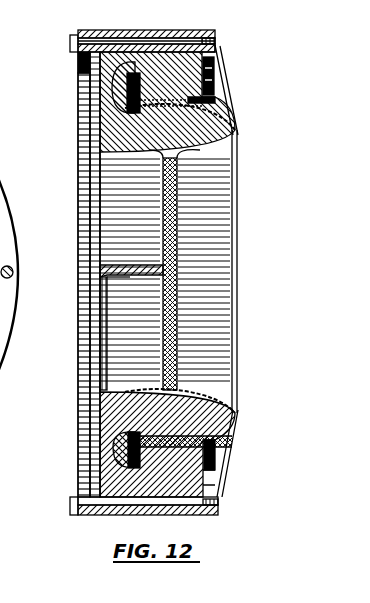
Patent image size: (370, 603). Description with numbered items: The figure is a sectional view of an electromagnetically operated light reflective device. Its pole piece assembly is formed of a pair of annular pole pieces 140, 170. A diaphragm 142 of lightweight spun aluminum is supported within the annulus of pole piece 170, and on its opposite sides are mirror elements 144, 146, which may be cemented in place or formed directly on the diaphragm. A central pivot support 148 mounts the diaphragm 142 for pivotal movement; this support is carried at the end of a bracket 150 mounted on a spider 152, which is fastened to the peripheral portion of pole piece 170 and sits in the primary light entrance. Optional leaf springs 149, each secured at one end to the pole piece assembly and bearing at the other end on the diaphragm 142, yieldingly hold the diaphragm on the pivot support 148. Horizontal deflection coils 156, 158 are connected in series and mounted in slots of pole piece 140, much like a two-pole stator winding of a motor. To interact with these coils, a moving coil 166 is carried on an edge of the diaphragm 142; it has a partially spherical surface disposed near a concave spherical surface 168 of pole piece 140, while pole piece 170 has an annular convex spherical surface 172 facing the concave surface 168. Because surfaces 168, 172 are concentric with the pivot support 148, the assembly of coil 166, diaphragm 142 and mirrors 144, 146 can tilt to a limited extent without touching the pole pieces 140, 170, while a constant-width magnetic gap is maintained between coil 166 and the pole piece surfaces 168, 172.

The annular pole piece 140 is at (183, 512).
The diaphragm 142 is at (238, 412).
The mirror element 144 is at (177, 290).
The mirror element 146 is at (162, 308).
The central pivot support 148 is at (162, 270).
The bracket 150 is at (130, 277).
The spider 152 is at (100, 347).
The horizontal deflection coil 156 is at (213, 54).
The horizontal deflection coil 158 is at (228, 467).
The moving coil 166 is at (213, 100).
The concave spherical surface 168 is at (210, 93).
The annular pole piece 170 is at (80, 81).
The annular convex spherical surface 172 is at (147, 112).
The leaf spring 149 is at (227, 68).